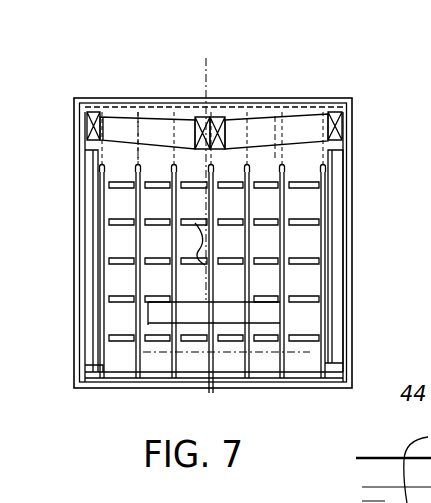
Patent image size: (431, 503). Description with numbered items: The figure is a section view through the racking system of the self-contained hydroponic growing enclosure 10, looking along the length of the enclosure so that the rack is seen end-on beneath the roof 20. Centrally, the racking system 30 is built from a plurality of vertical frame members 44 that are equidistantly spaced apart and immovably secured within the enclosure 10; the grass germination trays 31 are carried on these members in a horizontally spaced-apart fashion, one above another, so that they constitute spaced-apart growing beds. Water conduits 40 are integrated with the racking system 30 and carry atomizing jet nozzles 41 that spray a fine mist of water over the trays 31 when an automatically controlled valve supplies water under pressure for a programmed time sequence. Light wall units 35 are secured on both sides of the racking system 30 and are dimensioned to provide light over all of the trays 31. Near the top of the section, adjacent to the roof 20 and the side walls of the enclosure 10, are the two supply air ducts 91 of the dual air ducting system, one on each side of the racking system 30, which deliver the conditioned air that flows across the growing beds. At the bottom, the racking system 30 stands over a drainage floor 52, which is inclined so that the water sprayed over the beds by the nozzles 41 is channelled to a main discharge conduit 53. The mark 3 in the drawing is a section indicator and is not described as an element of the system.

The self-contained hydroponic growing enclosure 10 is at (229, 72).
The roof 20 is at (256, 98).
The supply air ducts 91 is at (92, 113).
The racking system 30 is at (126, 243).
The grass germination trays 31 is at (122, 338).
The water conduits 40 is at (283, 245).
The atomizing jet nozzles 41 is at (282, 203).
The light wall units 35 is at (337, 292).
The vertical frame members 44 is at (213, 347).
The drainage floor 52 is at (162, 372).
The main discharge conduit 53 is at (212, 372).
The section line 3 is at (193, 244).